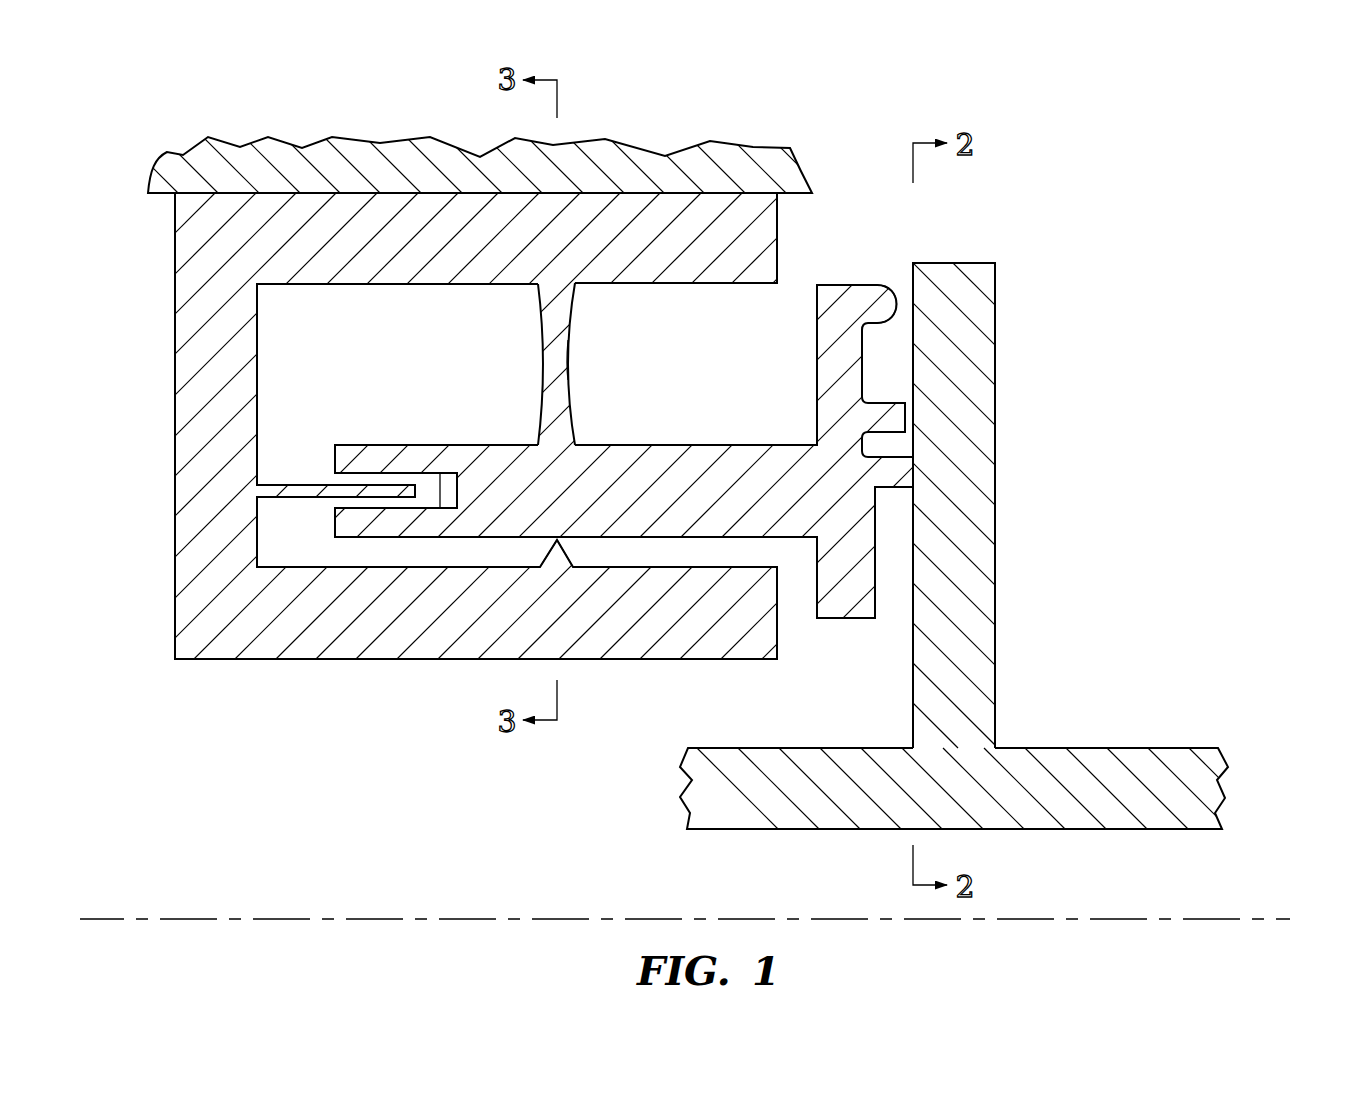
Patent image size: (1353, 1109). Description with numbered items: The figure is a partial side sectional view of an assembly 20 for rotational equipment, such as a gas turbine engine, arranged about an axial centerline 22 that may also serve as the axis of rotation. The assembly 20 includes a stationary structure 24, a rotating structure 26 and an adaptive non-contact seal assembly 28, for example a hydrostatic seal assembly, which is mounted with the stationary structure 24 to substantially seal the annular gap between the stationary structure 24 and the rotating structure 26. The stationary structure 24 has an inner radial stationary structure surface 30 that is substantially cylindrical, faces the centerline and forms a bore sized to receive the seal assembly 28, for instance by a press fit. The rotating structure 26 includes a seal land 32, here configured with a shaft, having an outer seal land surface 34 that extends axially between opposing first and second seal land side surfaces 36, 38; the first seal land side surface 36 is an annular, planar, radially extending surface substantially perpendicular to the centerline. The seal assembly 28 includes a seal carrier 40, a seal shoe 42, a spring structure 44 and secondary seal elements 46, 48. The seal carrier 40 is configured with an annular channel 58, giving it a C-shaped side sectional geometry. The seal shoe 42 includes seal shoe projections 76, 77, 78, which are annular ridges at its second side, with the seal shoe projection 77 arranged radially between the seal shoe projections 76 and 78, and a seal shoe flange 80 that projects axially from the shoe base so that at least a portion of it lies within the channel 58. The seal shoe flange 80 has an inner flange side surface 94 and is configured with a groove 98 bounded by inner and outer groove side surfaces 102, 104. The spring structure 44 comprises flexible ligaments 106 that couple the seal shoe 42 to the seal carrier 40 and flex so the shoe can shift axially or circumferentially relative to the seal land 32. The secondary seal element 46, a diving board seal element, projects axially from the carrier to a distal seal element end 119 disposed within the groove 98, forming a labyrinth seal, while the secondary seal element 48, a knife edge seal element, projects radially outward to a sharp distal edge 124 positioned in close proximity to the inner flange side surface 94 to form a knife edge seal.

The assembly 20 is at (1143, 152).
The axial centerline 22 is at (1297, 915).
The stationary structure 24 is at (190, 150).
The rotating structure 26 is at (1193, 735).
The adaptive non-contact seal assembly 28 is at (310, 693).
The stationary structure surface 30 is at (160, 197).
The seal land 32 is at (1007, 293).
The outer seal land surface 34 is at (958, 262).
The first seal land side surface 36 is at (913, 697).
The second seal land side surface 38 is at (995, 703).
The seal carrier 40 is at (168, 325).
The seal shoe 42 is at (685, 445).
The spring structure 44 is at (538, 327).
The secondary seal element 46 is at (288, 485).
The secondary seal element 48 is at (537, 553).
The channel 58 is at (391, 333).
The seal shoe projection 76 is at (915, 470).
The seal shoe projection 77 is at (907, 415).
The seal shoe projection 78 is at (897, 288).
The seal shoe flange 80 is at (623, 445).
The inner flange side surface 94 is at (414, 540).
The groove 98 is at (418, 490).
The inner groove side surface 102 is at (392, 483).
The outer groove side surface 104 is at (392, 500).
The ligament 106 is at (568, 355).
The distal seal element end 119 is at (440, 493).
The distal edge 124 is at (557, 540).